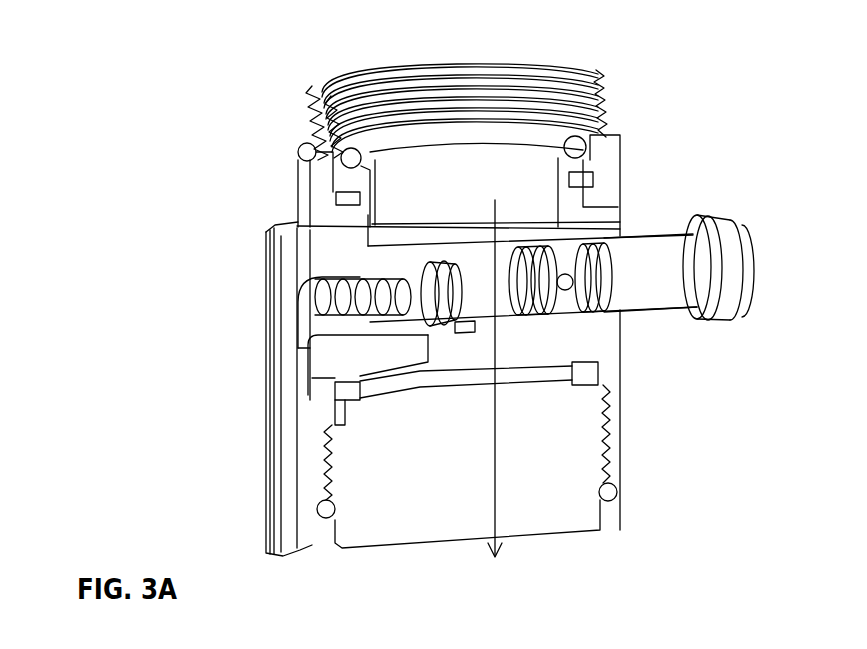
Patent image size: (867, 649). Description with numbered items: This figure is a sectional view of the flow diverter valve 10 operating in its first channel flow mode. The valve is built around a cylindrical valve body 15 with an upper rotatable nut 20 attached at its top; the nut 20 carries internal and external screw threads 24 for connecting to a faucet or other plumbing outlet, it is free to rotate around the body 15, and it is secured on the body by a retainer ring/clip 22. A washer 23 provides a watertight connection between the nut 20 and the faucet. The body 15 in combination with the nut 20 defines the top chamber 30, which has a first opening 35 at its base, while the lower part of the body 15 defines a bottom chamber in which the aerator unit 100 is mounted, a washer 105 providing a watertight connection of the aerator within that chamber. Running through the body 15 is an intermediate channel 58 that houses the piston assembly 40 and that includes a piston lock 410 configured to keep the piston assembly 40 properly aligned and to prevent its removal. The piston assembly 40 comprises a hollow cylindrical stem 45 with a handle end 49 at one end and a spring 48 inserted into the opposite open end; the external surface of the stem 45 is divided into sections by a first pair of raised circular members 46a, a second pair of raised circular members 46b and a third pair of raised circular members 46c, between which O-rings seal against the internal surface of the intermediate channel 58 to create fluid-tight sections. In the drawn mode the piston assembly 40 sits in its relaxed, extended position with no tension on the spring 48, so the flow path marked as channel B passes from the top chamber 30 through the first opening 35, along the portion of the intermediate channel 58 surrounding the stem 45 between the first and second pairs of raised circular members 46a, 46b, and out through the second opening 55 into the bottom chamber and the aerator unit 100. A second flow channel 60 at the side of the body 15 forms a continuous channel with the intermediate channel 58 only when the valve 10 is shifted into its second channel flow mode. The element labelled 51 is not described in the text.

The flow diverter valve 10 is at (143, 277).
The cylindrical valve body 15 is at (275, 470).
The upper rotatable nut 20 is at (613, 157).
The retainer ring/clip 22 is at (335, 201).
The washer 23 is at (540, 135).
The internal and external screw threads 24 is at (396, 97).
The top chamber 30 is at (463, 190).
The first opening 35 is at (512, 230).
The piston assembly 40 is at (663, 240).
The hollow cylindrical stem 45 is at (473, 280).
The first pair of raised circular members 46a is at (523, 313).
The second pair of raised circular members 46b is at (427, 318).
The third pair of raised circular members 46c is at (603, 278).
The spring 48 is at (333, 305).
The handle end 49 is at (740, 250).
The lower housing 51 is at (613, 496).
The second opening 55 is at (440, 373).
The intermediate channel 58 is at (372, 268).
The second flow channel 60 is at (310, 537).
The aerator unit 100 is at (540, 514).
The washer 105 is at (350, 392).
The piston lock 410 is at (462, 320).